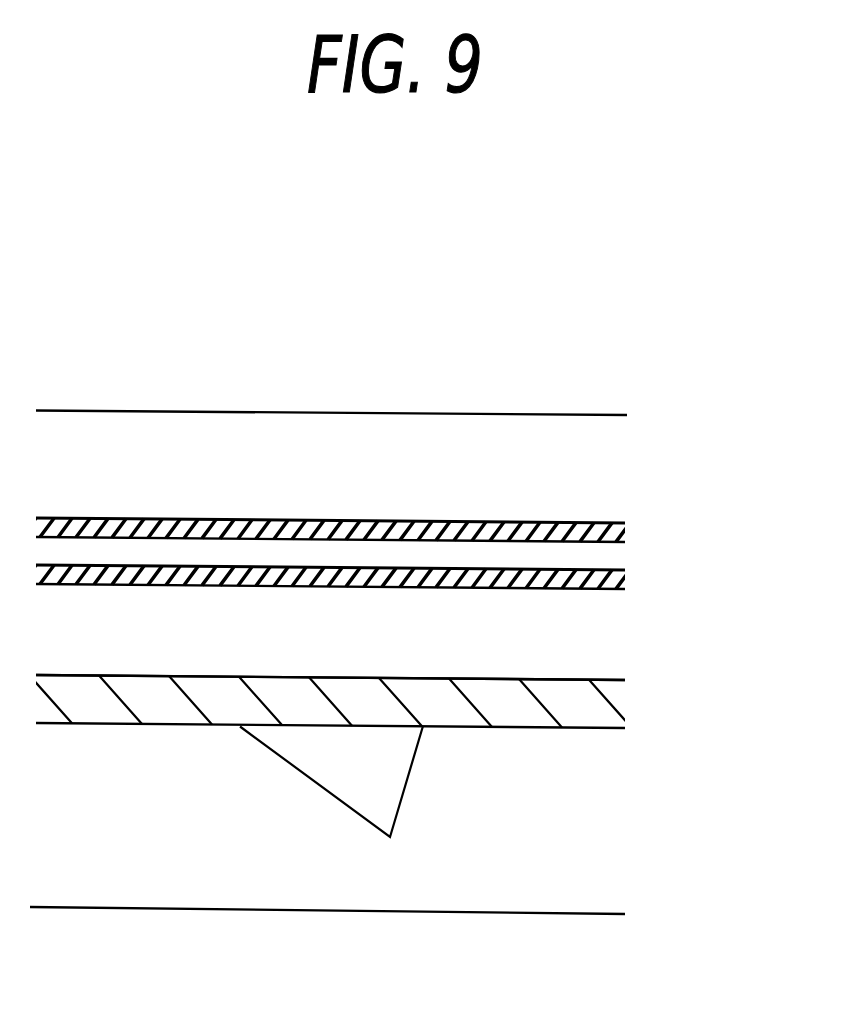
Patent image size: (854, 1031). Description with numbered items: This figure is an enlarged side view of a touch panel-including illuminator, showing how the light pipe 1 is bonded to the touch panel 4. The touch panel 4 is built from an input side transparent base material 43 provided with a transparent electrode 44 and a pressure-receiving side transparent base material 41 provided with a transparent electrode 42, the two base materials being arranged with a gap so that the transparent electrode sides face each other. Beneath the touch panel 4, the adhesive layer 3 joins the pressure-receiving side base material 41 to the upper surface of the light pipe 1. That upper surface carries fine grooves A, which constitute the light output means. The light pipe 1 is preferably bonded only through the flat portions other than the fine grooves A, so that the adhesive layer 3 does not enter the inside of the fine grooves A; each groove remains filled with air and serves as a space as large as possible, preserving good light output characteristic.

The light pipe 1 is at (610, 804).
The adhesive layer 3 is at (620, 707).
The touch panel 4 is at (407, 546).
The pressure-receiving side transparent base material 41 is at (384, 648).
The transparent electrode 42 is at (625, 581).
The input side transparent base material 43 is at (618, 467).
The transparent electrode 44 is at (625, 535).
The fine grooves A is at (385, 798).